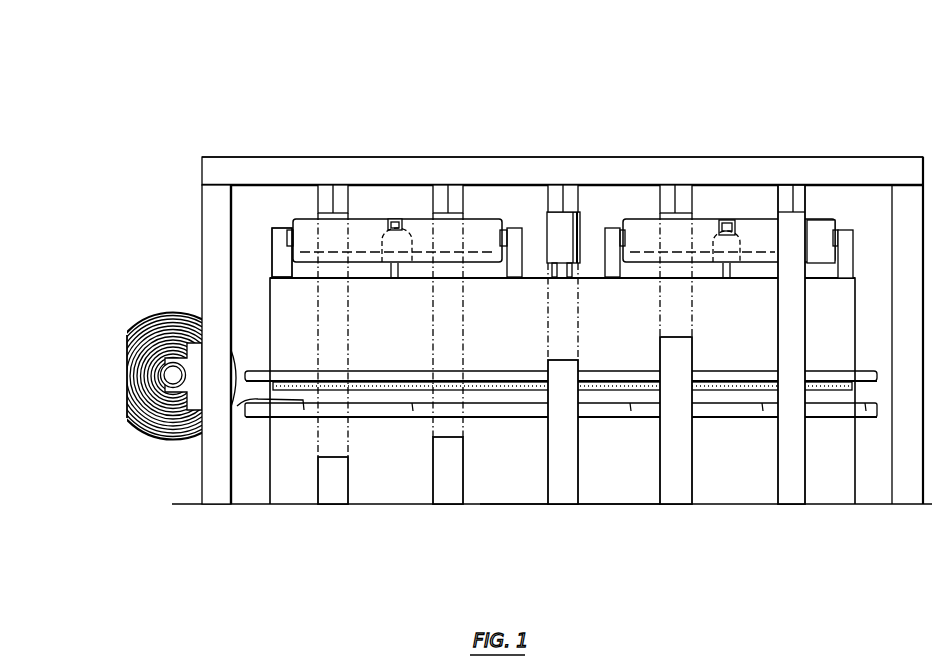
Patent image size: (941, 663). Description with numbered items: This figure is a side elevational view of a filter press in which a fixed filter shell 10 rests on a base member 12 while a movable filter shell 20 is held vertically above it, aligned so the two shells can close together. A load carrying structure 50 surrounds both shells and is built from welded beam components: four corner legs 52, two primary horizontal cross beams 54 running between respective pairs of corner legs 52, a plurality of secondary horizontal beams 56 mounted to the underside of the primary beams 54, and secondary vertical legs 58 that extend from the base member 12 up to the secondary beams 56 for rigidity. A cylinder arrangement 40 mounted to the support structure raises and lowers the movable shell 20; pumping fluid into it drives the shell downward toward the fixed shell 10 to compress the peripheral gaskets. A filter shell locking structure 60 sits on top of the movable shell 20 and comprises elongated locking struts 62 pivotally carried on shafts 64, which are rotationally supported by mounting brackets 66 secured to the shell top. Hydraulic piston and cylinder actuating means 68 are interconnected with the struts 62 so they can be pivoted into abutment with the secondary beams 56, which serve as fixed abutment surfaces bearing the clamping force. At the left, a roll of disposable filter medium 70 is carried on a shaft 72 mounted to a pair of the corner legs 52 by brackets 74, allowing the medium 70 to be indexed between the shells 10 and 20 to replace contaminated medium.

The fixed filter shell 10 is at (864, 478).
The base member 12 is at (602, 503).
The movable filter shell 20 is at (864, 316).
The cylinder arrangement 40 is at (590, 228).
The load carrying structure 50 is at (237, 108).
The corner legs 52 is at (223, 494).
The primary horizontal cross beams 54 is at (843, 165).
The secondary horizontal beams 56 is at (460, 192).
The secondary vertical legs 58 is at (550, 463).
The filter shell locking structure 60 is at (281, 220).
The locking struts 62 is at (368, 234).
The shafts 64 is at (838, 233).
The mounting brackets 66 is at (282, 278).
The hydraulic piston and cylinder actuating means 68 is at (400, 255).
The filter medium 70 is at (165, 426).
The shaft 72 is at (170, 360).
The brackets 74 is at (196, 343).